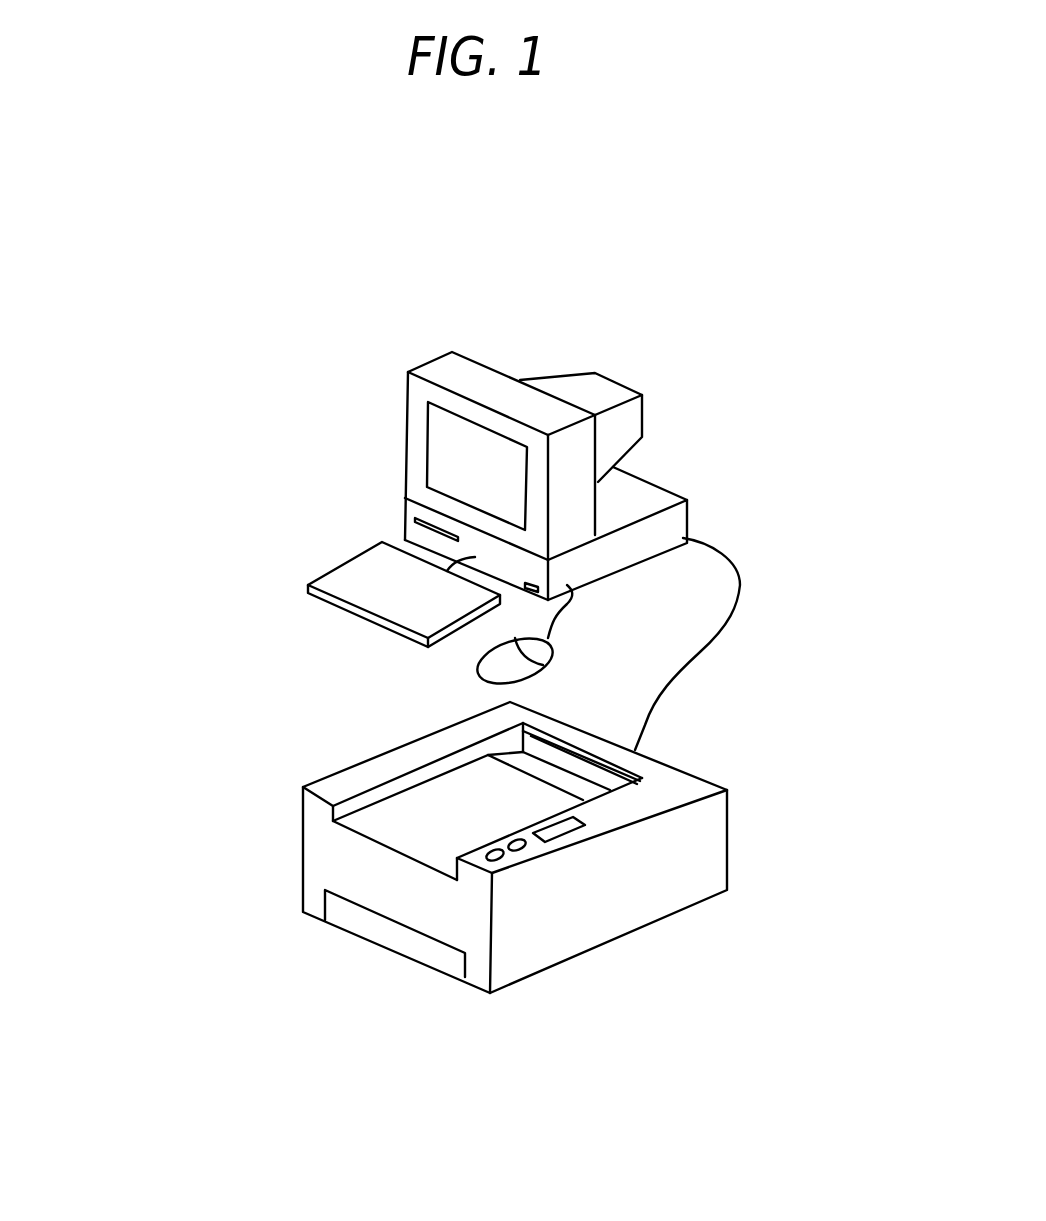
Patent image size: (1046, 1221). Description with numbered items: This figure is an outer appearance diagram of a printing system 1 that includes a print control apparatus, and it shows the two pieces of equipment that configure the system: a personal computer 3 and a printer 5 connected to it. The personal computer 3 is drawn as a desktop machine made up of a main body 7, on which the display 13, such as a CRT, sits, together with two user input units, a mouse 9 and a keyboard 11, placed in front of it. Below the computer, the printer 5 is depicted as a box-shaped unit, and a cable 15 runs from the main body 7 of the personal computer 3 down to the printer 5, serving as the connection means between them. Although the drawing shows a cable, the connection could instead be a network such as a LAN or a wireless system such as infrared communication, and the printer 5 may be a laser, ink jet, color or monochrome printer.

The printing system 1 is at (210, 640).
The personal computer 3 is at (683, 449).
The printer 5 is at (725, 761).
The main body 7 is at (675, 530).
The mouse 9 is at (503, 673).
The keyboard 11 is at (368, 577).
The display 13 is at (460, 448).
The cable 15 is at (737, 588).